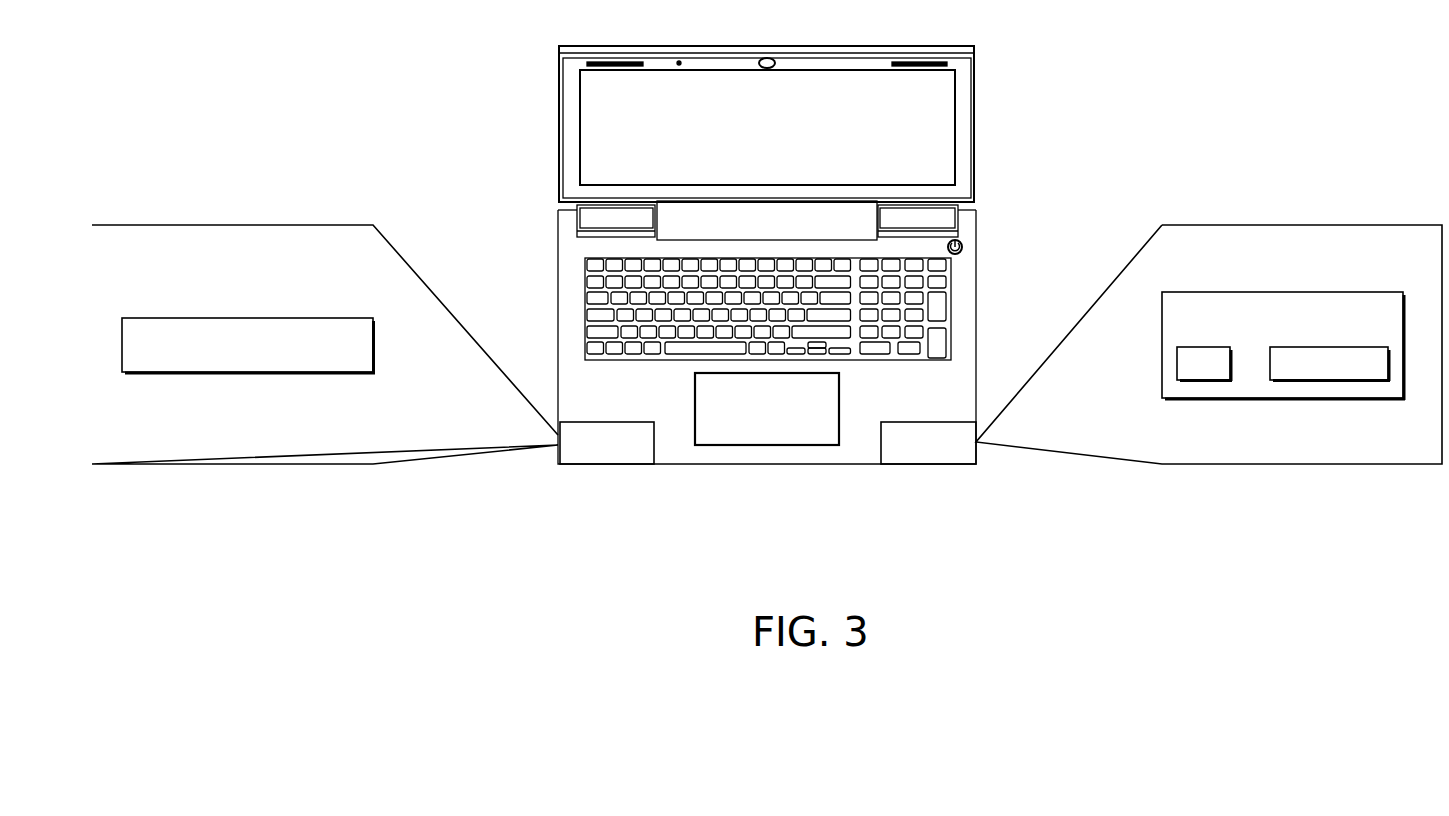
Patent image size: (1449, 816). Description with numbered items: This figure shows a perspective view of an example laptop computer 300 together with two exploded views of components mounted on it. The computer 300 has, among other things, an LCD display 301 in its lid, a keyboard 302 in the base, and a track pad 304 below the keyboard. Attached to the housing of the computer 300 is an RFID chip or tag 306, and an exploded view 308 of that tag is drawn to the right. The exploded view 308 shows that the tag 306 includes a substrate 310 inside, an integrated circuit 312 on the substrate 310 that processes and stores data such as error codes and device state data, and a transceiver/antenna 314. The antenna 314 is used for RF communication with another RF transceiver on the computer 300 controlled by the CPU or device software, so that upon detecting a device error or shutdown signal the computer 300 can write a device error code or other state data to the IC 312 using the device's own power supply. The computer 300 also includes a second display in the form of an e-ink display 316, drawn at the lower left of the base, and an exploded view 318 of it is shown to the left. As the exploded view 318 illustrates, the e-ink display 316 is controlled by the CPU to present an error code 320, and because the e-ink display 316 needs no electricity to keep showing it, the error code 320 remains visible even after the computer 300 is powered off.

The laptop computer 300 is at (513, 93).
The LCD display 301 is at (945, 110).
The keyboard 302 is at (945, 300).
The track pad 304 is at (839, 383).
The RFID tag 306 is at (927, 466).
The exploded view 308 is at (1273, 223).
The substrate 310 is at (1287, 297).
The integrated circuit 312 is at (1175, 362).
The transceiver/antenna 314 is at (1328, 382).
The e-ink display 316 is at (607, 466).
The exploded view 318 is at (233, 223).
The error code 320 is at (245, 362).